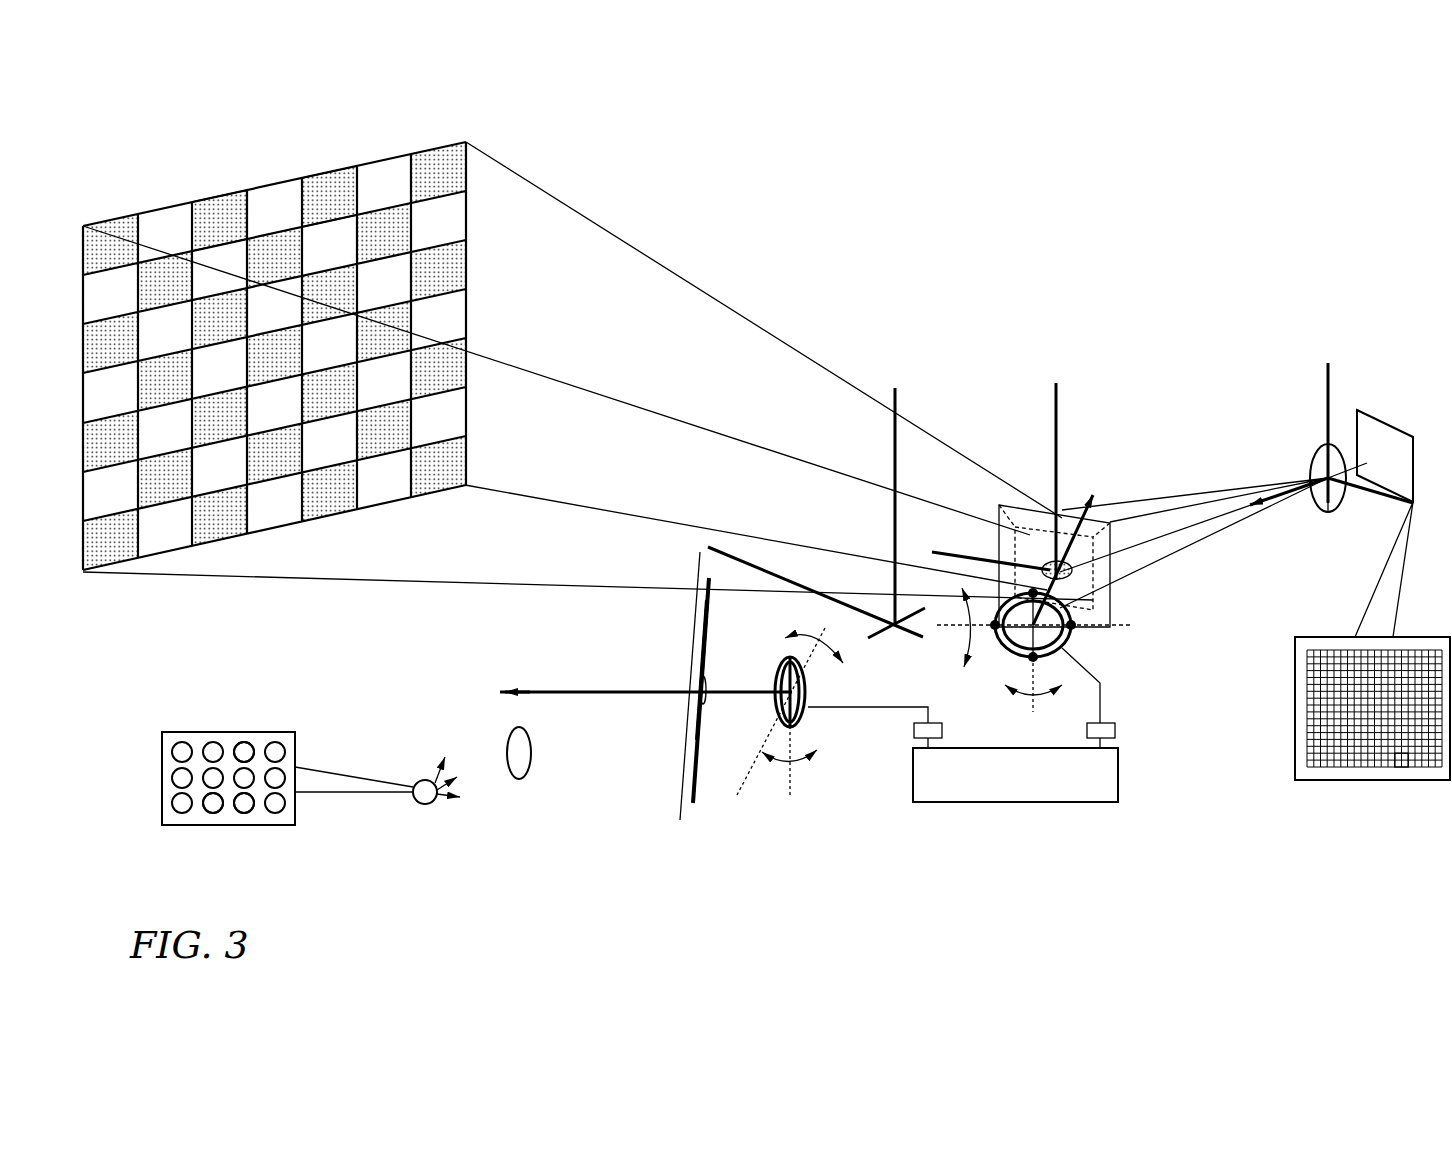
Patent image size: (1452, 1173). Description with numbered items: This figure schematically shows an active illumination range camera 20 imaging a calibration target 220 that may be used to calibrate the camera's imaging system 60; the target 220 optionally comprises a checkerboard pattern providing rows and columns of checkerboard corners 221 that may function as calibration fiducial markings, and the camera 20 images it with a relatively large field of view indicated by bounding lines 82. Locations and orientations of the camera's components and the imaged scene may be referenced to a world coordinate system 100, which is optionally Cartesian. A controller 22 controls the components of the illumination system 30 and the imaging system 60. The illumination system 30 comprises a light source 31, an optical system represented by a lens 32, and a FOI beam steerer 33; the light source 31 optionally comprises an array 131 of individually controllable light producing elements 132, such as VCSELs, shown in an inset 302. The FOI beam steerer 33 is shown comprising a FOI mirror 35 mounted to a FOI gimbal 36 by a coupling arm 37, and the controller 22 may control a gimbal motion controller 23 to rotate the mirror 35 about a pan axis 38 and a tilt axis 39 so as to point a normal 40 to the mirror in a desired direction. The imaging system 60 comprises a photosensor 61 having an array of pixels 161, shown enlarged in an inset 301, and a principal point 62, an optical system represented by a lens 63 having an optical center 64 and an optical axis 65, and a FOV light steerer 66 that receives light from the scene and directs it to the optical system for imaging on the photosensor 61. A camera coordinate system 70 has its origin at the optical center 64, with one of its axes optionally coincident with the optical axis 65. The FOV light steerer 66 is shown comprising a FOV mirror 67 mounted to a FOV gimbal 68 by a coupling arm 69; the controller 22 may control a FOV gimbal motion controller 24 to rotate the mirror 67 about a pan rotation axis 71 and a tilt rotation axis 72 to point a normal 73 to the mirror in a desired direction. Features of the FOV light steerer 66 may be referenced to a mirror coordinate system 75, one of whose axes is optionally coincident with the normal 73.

The active illumination range camera 20 is at (1010, 265).
The controller 22 is at (1015, 802).
The gimbal motion controller 23 is at (914, 731).
The FOV gimbal motion controller 24 is at (1115, 730).
The illumination system 30 is at (348, 720).
The light source 31 is at (425, 804).
The lens 32 is at (519, 779).
The FOI beam steerer 33 is at (660, 822).
The FOI mirror 35 is at (693, 747).
The FOI gimbal 36 is at (808, 695).
The coupling arm 37 is at (753, 688).
The pan axis 38 is at (790, 783).
The tilt axis 39 is at (740, 795).
The normal 40 is at (505, 688).
The imaging system 60 is at (1228, 372).
The photosensor 61 is at (1407, 425).
The principal point 62 is at (1367, 463).
The lens 63 is at (1310, 465).
The optical center 64 is at (1328, 512).
The optical axis 65 is at (1275, 497).
The FOV light steerer 66 is at (1168, 690).
The FOV mirror 67 is at (1020, 518).
The FOV gimbal 68 is at (1073, 637).
The coupling arm 69 is at (1095, 598).
The camera coordinate system 70 is at (1336, 372).
The pan rotation axis 71 is at (1033, 708).
The tilt rotation axis 72 is at (958, 668).
The normal 73 is at (1088, 488).
The mirror coordinate system 75 is at (1068, 393).
The bounding lines 82 is at (703, 292).
The world coordinate system 100 is at (884, 388).
The array of light producing elements 131 is at (258, 740).
The light producing elements 132 is at (213, 813).
The pixels 161 is at (1398, 757).
The calibration target 220 is at (472, 208).
The checkerboard corners 221 is at (247, 238).
The inset 301 is at (1358, 780).
The inset 302 is at (217, 732).